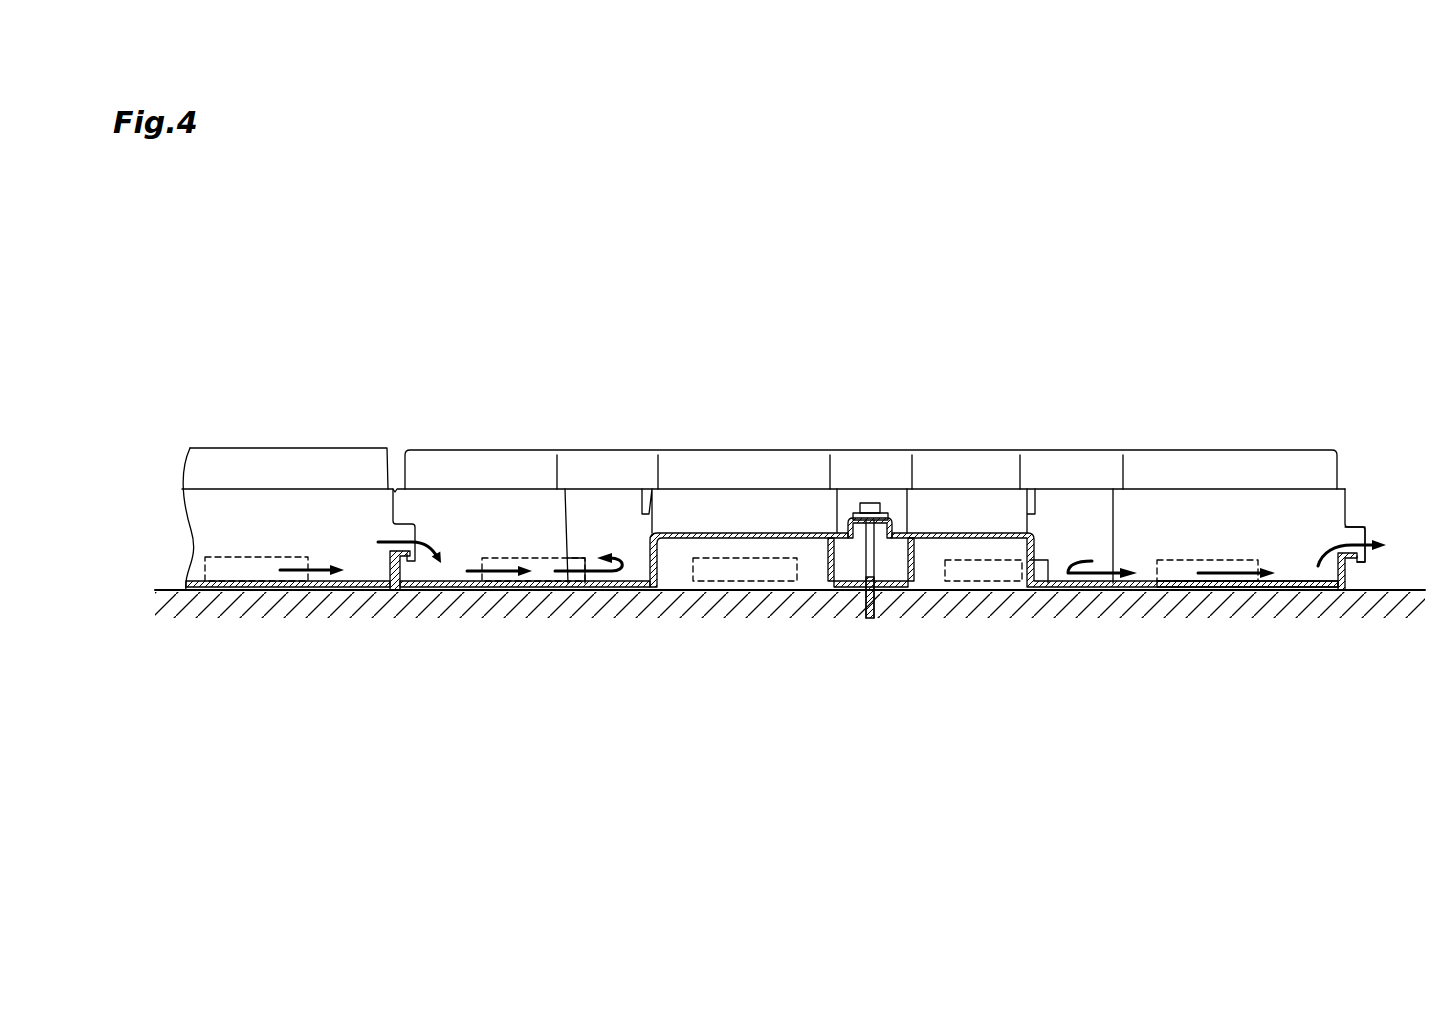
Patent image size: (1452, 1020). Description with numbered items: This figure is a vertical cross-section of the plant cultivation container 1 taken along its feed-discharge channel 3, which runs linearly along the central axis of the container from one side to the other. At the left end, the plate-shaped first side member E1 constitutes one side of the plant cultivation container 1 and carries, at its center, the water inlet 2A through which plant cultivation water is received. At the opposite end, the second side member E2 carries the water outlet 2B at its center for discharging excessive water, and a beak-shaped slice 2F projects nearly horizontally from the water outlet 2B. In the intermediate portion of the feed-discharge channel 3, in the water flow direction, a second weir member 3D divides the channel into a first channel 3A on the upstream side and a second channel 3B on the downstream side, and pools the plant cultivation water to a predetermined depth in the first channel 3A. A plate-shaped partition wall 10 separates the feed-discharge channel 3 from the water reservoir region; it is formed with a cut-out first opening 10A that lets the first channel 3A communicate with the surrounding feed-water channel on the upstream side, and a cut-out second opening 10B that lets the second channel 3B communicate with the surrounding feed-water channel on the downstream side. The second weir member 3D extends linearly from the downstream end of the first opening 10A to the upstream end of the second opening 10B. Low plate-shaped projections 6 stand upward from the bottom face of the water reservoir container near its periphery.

The plant cultivation container 1 is at (276, 358).
The first channel 3A is at (247, 580).
The water inlet 2A is at (386, 517).
The first side member E1 is at (401, 500).
The first opening 10A is at (580, 502).
The partition wall 10 is at (704, 505).
The feed-discharge channel 3 is at (770, 508).
The second weir member 3D is at (949, 520).
The second opening 10B is at (1097, 508).
The second side member E2 is at (1356, 496).
The water outlet 2B is at (1367, 526).
The beak-shaped slice 2F is at (1352, 558).
The second channel 3B is at (1158, 576).
The low plate-shaped projection 6 is at (530, 558).